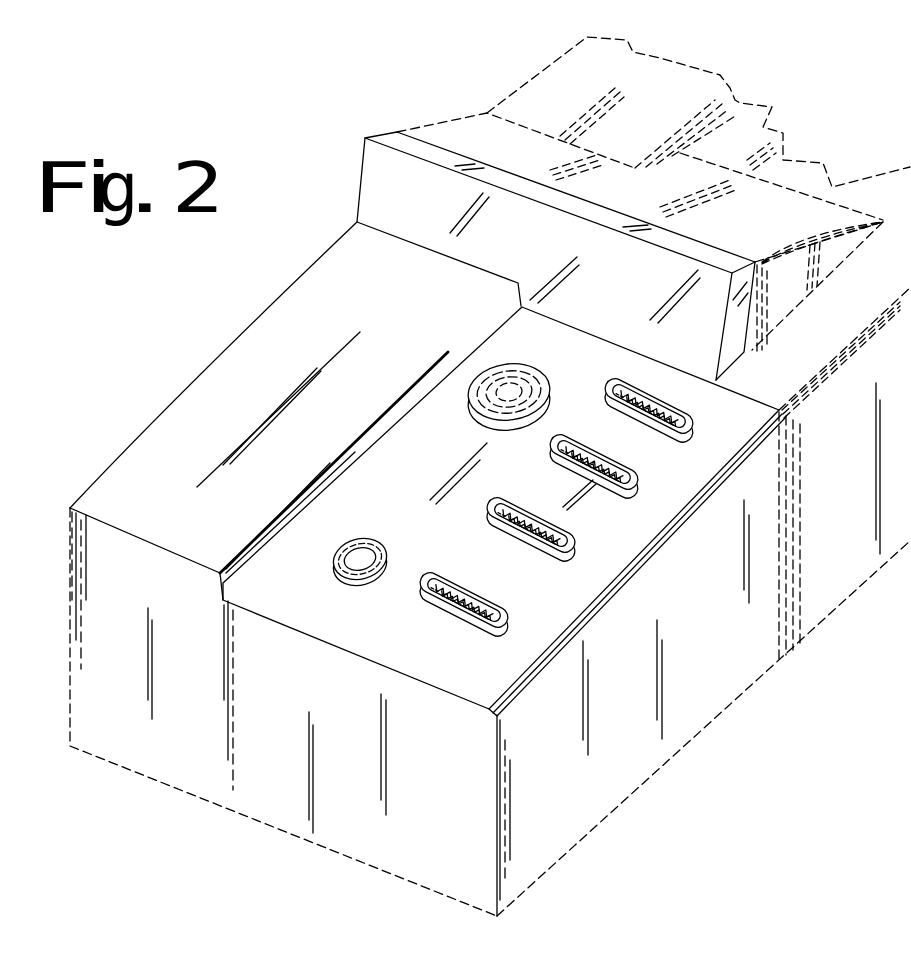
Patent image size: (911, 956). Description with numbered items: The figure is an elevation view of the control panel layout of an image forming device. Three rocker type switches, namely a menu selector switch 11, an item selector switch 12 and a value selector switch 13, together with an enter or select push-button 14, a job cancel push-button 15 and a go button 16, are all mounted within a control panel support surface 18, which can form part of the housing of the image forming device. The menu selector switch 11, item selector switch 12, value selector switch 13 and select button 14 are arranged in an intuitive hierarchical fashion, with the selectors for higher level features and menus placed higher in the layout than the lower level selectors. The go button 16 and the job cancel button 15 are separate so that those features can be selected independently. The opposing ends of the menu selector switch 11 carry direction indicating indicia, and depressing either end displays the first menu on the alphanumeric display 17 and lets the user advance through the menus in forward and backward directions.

The menu selector switch 11 is at (676, 432).
The item selector switch 12 is at (620, 497).
The value selector switch 13 is at (550, 556).
The select push-button 14 is at (456, 613).
The job cancel push-button 15 is at (337, 566).
The go button 16 is at (488, 422).
The alphanumeric display 17 is at (546, 259).
The control panel support surface 18 is at (338, 637).